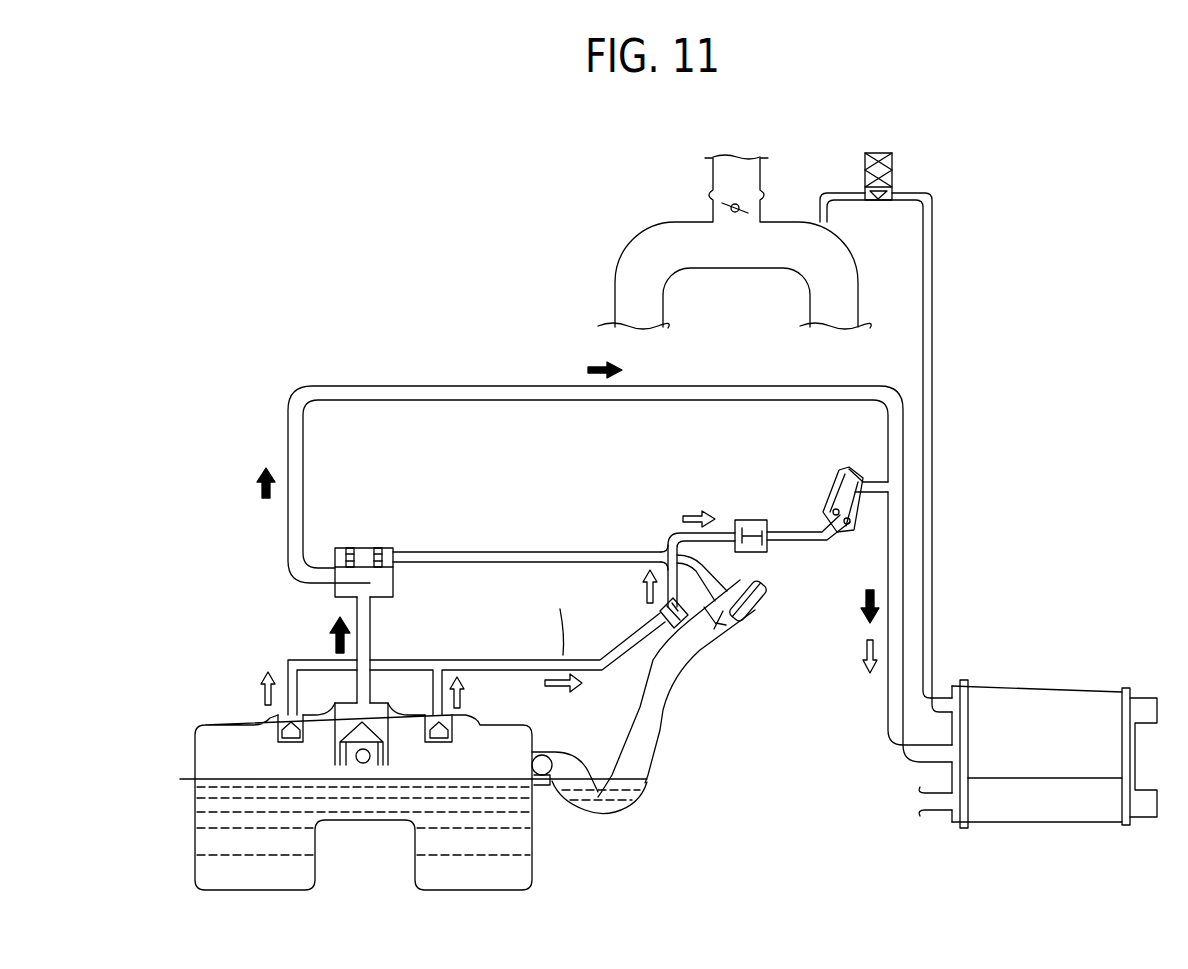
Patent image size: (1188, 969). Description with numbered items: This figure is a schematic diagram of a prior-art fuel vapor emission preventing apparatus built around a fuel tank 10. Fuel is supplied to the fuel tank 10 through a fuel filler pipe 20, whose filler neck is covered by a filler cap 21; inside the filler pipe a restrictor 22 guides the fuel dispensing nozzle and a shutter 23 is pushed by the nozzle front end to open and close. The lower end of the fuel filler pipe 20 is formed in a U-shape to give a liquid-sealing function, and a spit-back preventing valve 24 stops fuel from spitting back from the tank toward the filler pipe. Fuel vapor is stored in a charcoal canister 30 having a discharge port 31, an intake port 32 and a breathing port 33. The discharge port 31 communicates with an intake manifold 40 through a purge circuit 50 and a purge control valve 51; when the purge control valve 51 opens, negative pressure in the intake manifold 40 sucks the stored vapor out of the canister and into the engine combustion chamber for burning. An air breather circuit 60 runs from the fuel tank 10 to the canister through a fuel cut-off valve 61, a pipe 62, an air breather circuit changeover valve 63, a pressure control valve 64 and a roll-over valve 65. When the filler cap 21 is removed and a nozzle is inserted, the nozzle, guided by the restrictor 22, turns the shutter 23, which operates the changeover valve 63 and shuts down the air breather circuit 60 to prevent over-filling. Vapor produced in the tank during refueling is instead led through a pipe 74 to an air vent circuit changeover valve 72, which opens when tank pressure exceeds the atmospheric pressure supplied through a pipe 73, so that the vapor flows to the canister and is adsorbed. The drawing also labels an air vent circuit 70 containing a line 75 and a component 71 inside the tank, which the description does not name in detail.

The fuel tank 10 is at (536, 877).
The fuel filler pipe 20 is at (670, 738).
The filler cap 21 is at (762, 590).
The restrictor 22 is at (722, 633).
The shutter 23 is at (712, 627).
The spit-back preventing valve 24 is at (545, 776).
The charcoal canister 30 is at (1037, 685).
The discharge port 31 is at (937, 697).
The intake port 32 is at (933, 757).
The breathing port 33 is at (932, 803).
The intake manifold 40 is at (783, 215).
The purge circuit 50 is at (940, 373).
The purge control valve 51 is at (893, 163).
The air breather circuit 60 is at (567, 650).
The fuel cut-off valve 61 is at (280, 732).
The pipe 62 is at (483, 662).
The air breather circuit changeover valve 63 is at (658, 614).
The pressure control valve 64 is at (750, 520).
The roll-over valve 65 is at (838, 490).
The fresh air passage 70 is at (403, 382).
The piston 71 is at (338, 740).
The air vent circuit changeover valve 72 is at (365, 548).
The pipe 73 is at (520, 552).
The pipe 74 is at (368, 633).
The pipe 75 is at (520, 393).